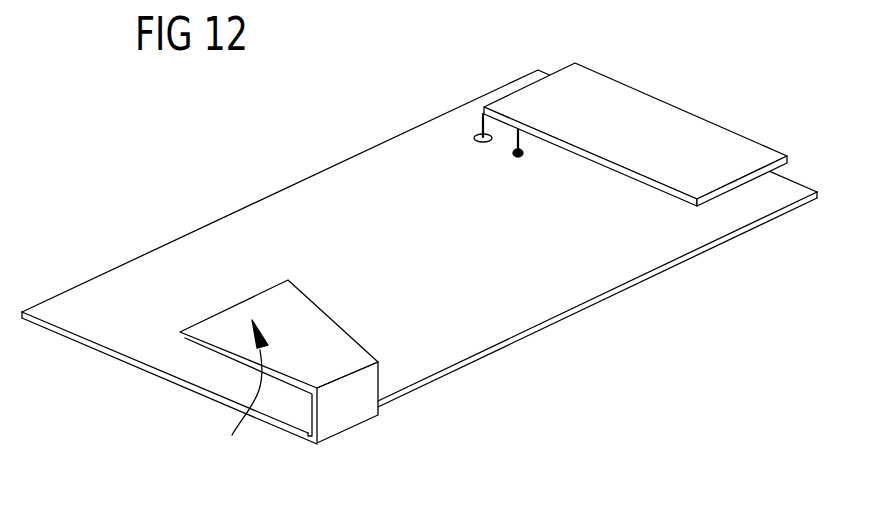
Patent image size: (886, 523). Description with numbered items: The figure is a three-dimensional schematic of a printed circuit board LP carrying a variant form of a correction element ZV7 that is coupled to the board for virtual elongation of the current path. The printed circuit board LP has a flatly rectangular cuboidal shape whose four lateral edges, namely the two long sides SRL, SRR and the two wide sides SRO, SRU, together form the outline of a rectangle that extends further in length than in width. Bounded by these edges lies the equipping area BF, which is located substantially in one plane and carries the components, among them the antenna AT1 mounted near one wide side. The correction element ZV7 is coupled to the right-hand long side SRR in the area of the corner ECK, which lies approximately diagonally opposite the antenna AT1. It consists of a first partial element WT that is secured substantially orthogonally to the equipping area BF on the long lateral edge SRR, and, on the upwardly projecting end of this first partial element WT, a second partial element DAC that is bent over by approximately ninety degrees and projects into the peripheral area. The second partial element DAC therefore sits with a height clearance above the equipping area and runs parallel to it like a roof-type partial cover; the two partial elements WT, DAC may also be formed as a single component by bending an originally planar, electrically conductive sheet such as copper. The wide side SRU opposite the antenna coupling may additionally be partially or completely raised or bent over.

The printed circuit board LP is at (565, 290).
The left-hand long side SRL is at (298, 183).
The upper wide side SRO is at (803, 185).
The right-hand long side SRR is at (496, 348).
The lower wide side SRU is at (132, 367).
The equipping area BF is at (676, 258).
The antenna AT1 is at (633, 100).
The second partial element DAC is at (318, 325).
The first partial element WT is at (353, 417).
The corner ECK is at (307, 443).
The correction element ZV7 is at (237, 395).